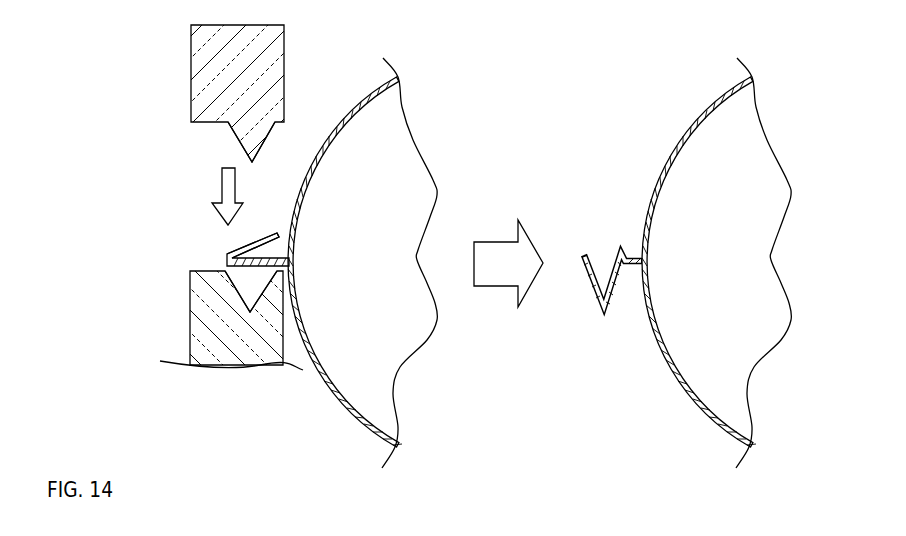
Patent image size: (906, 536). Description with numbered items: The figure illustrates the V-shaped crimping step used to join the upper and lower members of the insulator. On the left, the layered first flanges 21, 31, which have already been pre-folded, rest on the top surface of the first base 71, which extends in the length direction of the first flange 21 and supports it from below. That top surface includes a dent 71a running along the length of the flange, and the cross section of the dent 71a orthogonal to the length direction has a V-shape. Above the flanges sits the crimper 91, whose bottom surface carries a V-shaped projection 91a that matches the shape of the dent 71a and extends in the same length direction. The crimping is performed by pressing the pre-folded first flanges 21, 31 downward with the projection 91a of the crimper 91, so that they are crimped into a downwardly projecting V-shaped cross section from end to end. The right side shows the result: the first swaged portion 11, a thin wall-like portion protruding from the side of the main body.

The crimper 91 is at (212, 72).
The V-shaped projection 91a is at (243, 138).
The first flange 21 is at (235, 241).
The first flange 31 is at (277, 252).
The first base 71 is at (190, 342).
The dent 71a is at (245, 300).
The first swaged portion 11 is at (602, 268).